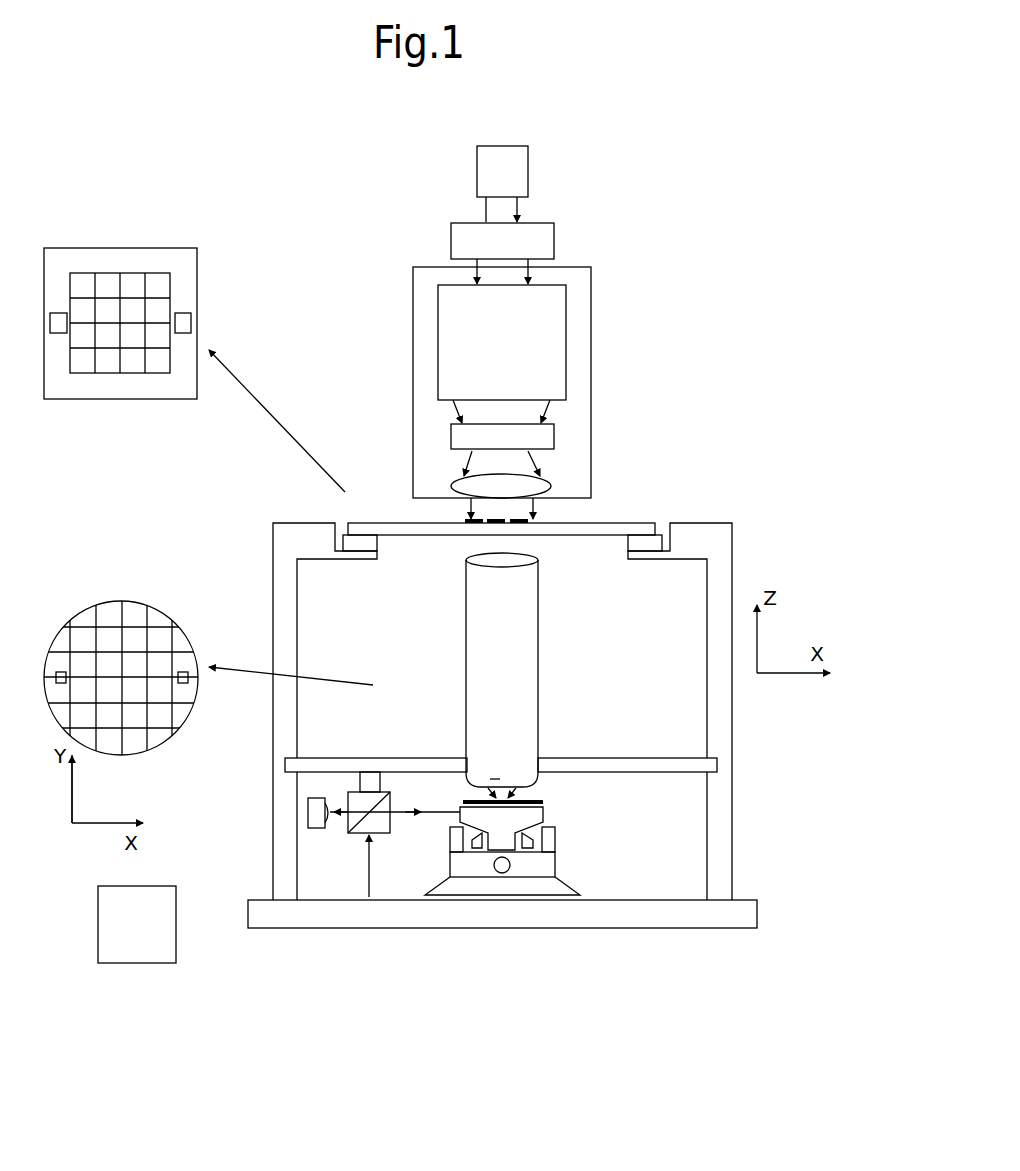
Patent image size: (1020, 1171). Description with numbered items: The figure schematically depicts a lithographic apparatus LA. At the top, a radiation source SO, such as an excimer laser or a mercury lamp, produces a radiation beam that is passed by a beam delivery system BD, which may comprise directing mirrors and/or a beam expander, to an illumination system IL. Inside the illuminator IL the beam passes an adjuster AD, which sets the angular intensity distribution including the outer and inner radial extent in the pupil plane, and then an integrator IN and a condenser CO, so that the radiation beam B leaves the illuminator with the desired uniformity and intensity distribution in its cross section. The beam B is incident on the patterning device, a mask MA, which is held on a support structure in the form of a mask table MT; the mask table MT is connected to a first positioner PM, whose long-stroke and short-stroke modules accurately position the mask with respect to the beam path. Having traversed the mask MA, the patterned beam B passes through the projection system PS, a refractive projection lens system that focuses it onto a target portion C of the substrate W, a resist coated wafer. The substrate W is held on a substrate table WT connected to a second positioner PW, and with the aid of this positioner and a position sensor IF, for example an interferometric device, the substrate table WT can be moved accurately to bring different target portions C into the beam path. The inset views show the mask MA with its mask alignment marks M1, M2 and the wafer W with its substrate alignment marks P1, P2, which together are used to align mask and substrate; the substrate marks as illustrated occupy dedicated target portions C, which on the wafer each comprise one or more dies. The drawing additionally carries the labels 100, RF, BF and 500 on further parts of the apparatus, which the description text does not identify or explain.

The radiation source SO is at (528, 174).
The beam delivery system BD is at (554, 247).
The illumination system IL is at (591, 307).
The adjuster AD is at (566, 353).
The integrator IN is at (554, 437).
The condenser CO is at (551, 487).
The radiation beam B is at (500, 511).
The patterning device MA is at (286, 363).
The support structure MT is at (633, 523).
The first positioner PM is at (657, 543).
The projection system PS is at (538, 650).
The alignment sensor 100 is at (493, 778).
The substrate W is at (287, 669).
The substrate table WT is at (543, 813).
The second positioner PW is at (555, 862).
The reference frame RF is at (603, 757).
The base frame BF is at (620, 928).
The position sensor IF is at (342, 840).
The lithographic apparatus LA is at (748, 421).
The target portion C is at (110, 340).
The mask alignment mark M1 is at (184, 313).
The mask alignment mark M2 is at (59, 313).
The substrate alignment mark P1 is at (60, 672).
The substrate alignment mark P2 is at (198, 638).
The control unit / computer 500 is at (114, 934).